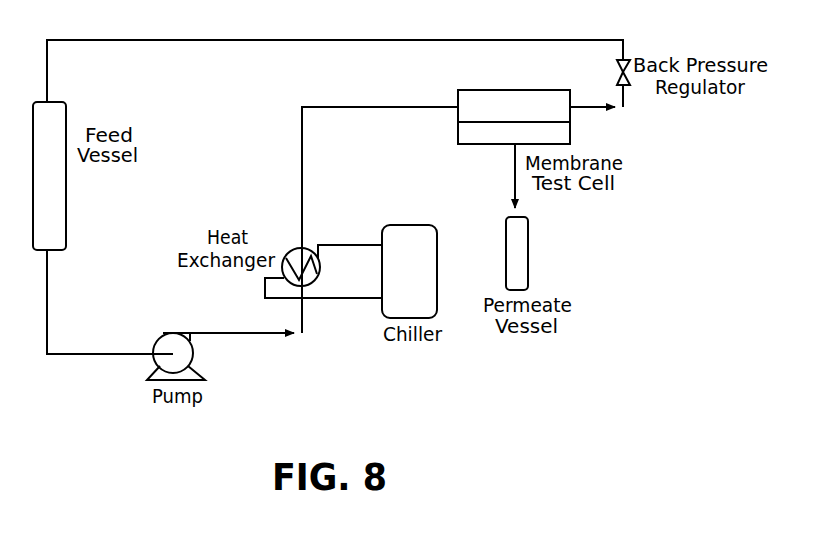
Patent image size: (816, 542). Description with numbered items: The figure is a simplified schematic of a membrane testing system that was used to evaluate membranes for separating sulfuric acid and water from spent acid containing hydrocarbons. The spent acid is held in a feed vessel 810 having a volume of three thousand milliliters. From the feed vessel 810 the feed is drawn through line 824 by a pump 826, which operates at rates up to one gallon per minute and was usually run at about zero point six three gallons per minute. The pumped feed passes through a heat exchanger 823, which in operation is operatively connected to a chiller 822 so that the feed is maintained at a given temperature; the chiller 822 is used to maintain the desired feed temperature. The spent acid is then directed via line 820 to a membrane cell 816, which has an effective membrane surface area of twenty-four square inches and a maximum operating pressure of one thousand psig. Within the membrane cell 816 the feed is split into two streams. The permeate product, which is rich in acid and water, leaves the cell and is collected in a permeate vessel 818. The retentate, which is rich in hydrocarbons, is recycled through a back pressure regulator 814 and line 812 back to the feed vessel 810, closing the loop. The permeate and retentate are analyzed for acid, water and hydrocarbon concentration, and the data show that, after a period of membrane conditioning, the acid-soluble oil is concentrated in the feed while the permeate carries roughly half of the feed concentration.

The feed vessel 810 is at (66, 222).
The line 812 is at (336, 40).
The back pressure regulator 814 is at (627, 60).
The membrane cell 816 is at (570, 130).
The permeate vessel 818 is at (528, 247).
The line 820 is at (368, 107).
The chiller 822 is at (437, 265).
The heat exchanger 823 is at (294, 250).
The heat exchanger 824 is at (47, 313).
The pump 826 is at (200, 373).